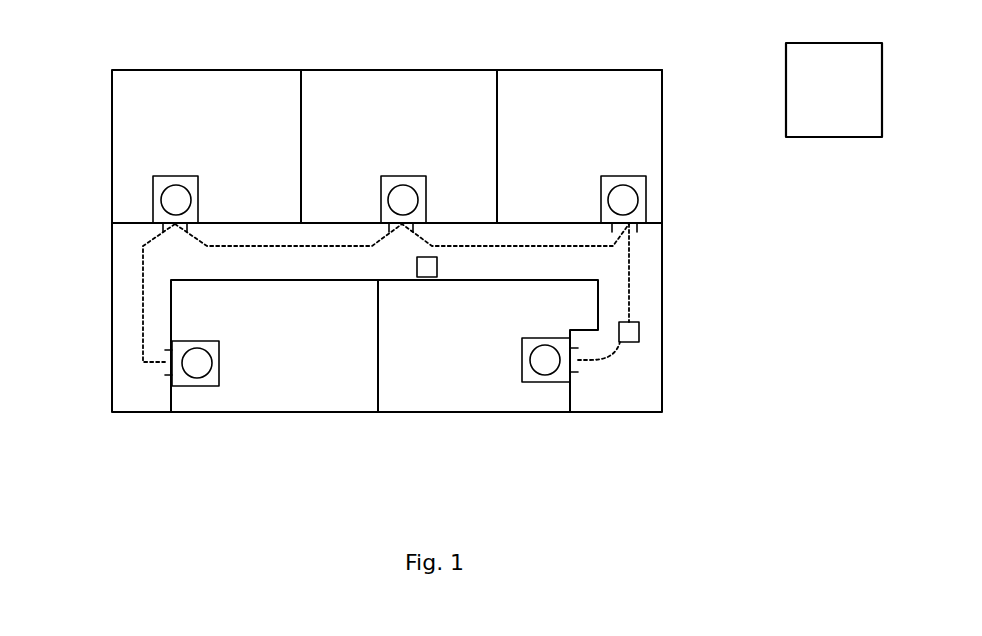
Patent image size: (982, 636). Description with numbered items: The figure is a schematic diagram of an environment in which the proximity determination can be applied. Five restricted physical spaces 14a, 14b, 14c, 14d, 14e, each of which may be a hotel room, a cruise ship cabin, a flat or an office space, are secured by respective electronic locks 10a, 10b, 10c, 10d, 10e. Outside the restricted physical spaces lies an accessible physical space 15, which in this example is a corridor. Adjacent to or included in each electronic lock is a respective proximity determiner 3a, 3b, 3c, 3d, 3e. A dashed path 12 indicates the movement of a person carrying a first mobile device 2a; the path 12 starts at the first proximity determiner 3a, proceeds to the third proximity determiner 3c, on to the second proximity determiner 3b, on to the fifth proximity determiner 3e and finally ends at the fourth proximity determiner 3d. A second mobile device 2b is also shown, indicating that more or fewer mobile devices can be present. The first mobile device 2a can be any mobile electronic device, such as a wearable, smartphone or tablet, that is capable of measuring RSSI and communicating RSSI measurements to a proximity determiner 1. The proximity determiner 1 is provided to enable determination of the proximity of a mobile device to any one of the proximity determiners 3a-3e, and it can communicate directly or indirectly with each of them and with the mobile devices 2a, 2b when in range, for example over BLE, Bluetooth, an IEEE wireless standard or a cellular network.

The proximity determiner 1 is at (842, 105).
The first mobile device 2a is at (639, 330).
The second mobile device 2b is at (417, 265).
The first proximity determiner 3a is at (522, 356).
The second proximity determiner 3b is at (404, 185).
The third proximity determiner 3c is at (623, 185).
The fourth proximity determiner 3d is at (213, 360).
The fifth proximity determiner 3e is at (177, 185).
The electronic lock 10a is at (546, 338).
The electronic lock 10b is at (381, 198).
The electronic lock 10c is at (601, 197).
The electronic lock 10d is at (197, 341).
The electronic lock 10e is at (199, 198).
The path 12 is at (140, 344).
The restricted physical space 14a is at (461, 400).
The restricted physical space 14b is at (418, 87).
The restricted physical space 14c is at (592, 87).
The restricted physical space 14d is at (213, 398).
The restricted physical space 14e is at (205, 82).
The accessible physical space 15 is at (620, 282).